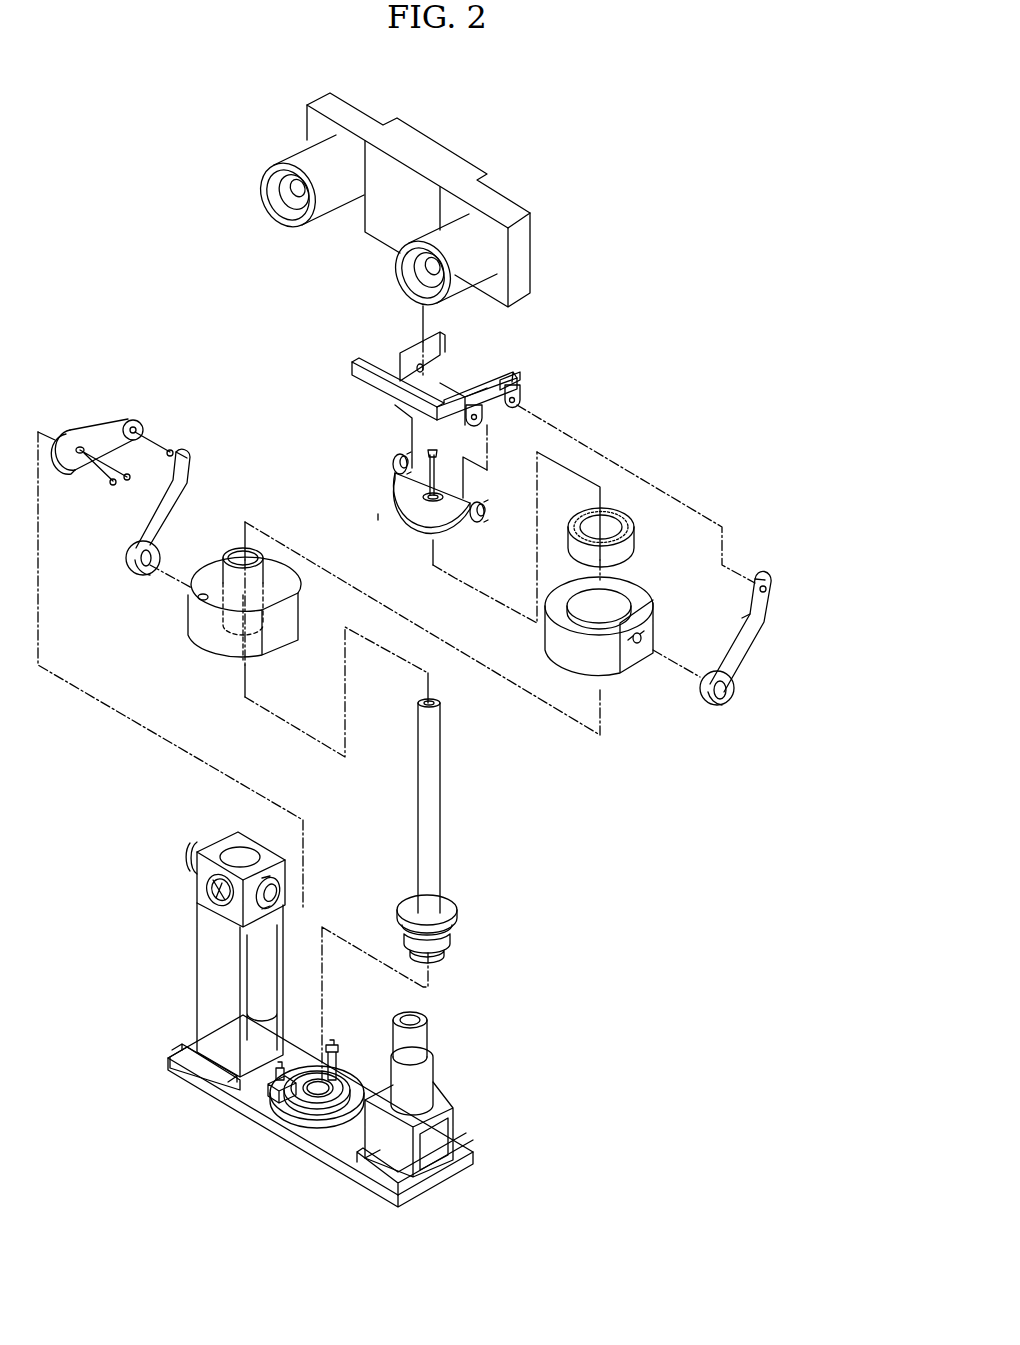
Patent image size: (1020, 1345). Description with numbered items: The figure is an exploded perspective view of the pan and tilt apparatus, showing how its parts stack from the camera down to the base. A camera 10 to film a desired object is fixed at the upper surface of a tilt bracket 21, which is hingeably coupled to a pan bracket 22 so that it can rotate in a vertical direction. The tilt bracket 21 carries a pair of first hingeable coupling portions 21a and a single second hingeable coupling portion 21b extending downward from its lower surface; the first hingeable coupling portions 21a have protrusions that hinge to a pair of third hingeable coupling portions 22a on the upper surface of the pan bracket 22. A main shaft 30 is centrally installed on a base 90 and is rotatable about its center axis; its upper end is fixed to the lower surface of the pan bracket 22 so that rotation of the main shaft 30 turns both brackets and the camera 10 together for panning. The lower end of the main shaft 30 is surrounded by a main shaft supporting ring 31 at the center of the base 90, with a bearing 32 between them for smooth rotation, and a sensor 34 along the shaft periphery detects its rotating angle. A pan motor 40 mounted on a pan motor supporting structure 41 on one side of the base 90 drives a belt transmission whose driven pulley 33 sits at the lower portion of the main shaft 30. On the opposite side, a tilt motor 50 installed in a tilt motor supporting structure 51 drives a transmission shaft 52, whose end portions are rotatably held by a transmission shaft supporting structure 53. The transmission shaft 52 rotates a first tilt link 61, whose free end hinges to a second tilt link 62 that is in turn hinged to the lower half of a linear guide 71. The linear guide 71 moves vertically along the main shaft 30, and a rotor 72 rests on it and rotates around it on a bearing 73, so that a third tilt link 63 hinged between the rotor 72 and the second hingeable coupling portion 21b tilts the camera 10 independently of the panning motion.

The camera 10 is at (445, 158).
The tilt bracket 21 is at (460, 367).
The first hingeable coupling portions 21a is at (392, 368).
The second hingeable coupling portion 21b is at (523, 387).
The pan bracket 22 is at (423, 511).
The third hingeable coupling portions 22a is at (396, 460).
The main shaft 30 is at (434, 790).
The main shaft supporting ring 31 is at (312, 1131).
The bearing 32 is at (320, 1100).
The driven pulley 33 is at (447, 940).
The sensor 34 is at (273, 1100).
The pan motor 40 is at (420, 1041).
The pan motor supporting structure 41 is at (440, 1105).
The tilt motor 50 is at (245, 961).
The tilt motor supporting structure 51 is at (210, 975).
The transmission shaft 52 is at (215, 895).
The transmission shaft supporting structure 53 is at (203, 873).
The first tilt link 61 is at (102, 432).
The second tilt link 62 is at (183, 515).
The third tilt link 63 is at (750, 640).
The linear guide 71 is at (208, 645).
The rotor 72 is at (625, 663).
The bearing 73 is at (625, 553).
The base 90 is at (233, 1090).